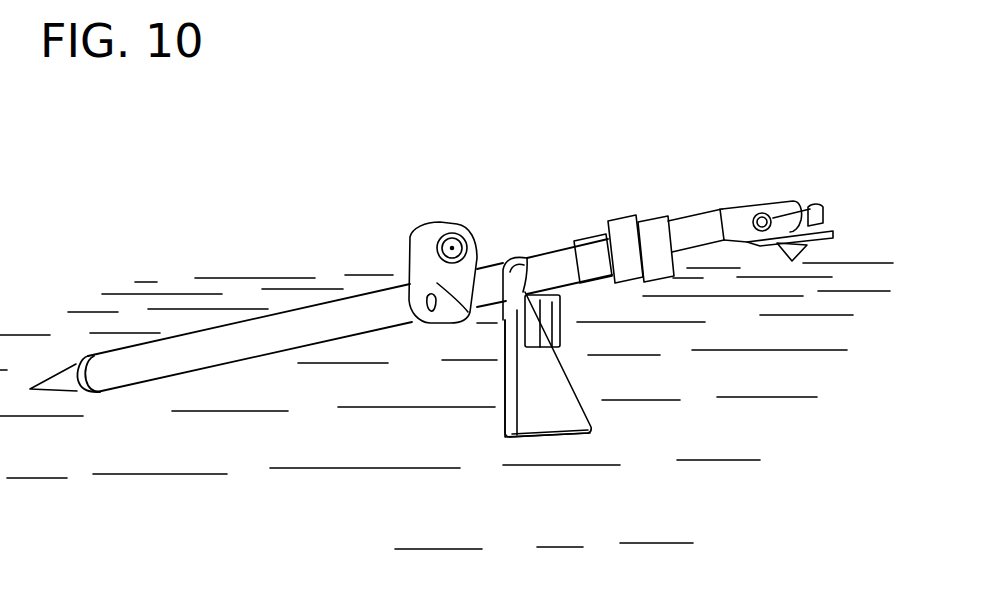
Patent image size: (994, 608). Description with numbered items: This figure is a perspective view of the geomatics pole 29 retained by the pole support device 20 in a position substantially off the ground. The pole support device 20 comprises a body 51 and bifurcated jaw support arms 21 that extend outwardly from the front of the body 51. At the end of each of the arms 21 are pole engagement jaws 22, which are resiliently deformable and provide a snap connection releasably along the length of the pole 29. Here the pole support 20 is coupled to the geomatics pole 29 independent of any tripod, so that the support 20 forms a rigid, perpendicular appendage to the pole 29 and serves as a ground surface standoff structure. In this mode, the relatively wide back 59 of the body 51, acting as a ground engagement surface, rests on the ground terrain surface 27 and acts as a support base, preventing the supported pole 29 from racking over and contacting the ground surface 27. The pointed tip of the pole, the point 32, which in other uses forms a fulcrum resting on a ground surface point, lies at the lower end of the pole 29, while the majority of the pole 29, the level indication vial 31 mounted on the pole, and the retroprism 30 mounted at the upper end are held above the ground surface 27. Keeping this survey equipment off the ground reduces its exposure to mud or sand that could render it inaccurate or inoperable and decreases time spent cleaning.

The pole support device 20 is at (616, 411).
The jaw support arms 21 is at (477, 270).
The pole engagement jaws 22 is at (505, 262).
The ground terrain surface 27 is at (238, 413).
The geomatics target support pole 29 is at (236, 322).
The retroprism 30 is at (767, 207).
The level indication vial 31 is at (452, 246).
The point 32 is at (60, 377).
The body 51 is at (582, 377).
The back 59 is at (545, 438).